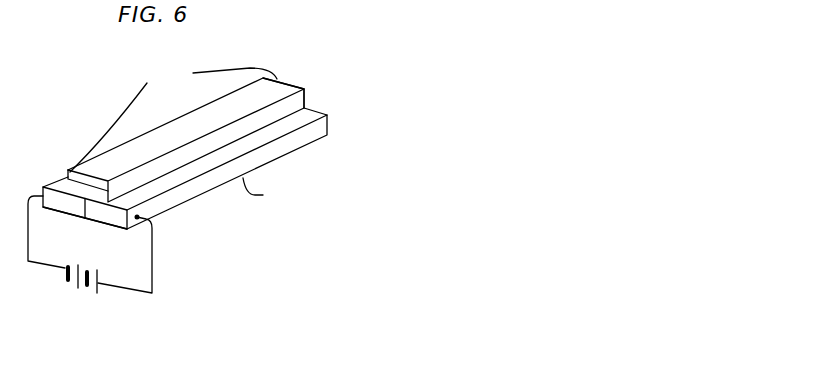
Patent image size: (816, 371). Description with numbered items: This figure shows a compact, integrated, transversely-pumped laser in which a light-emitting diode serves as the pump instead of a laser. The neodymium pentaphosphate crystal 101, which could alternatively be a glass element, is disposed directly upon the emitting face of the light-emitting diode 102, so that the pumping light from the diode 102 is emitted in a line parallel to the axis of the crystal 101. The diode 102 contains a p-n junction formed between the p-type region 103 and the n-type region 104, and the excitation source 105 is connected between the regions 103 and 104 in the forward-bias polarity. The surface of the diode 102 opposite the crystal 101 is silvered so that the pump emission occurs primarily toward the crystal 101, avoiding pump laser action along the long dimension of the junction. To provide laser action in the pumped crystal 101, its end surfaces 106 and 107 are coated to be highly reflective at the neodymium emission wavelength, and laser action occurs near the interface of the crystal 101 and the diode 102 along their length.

The neodymium pentaphosphate crystal 101 is at (82, 187).
The light-emitting diode 102 is at (396, 225).
The p-type region 103 is at (48, 208).
The n-type region 104 is at (126, 229).
The excitation source 105 is at (75, 280).
The end surface 106 is at (68, 182).
The end surface 107 is at (306, 99).